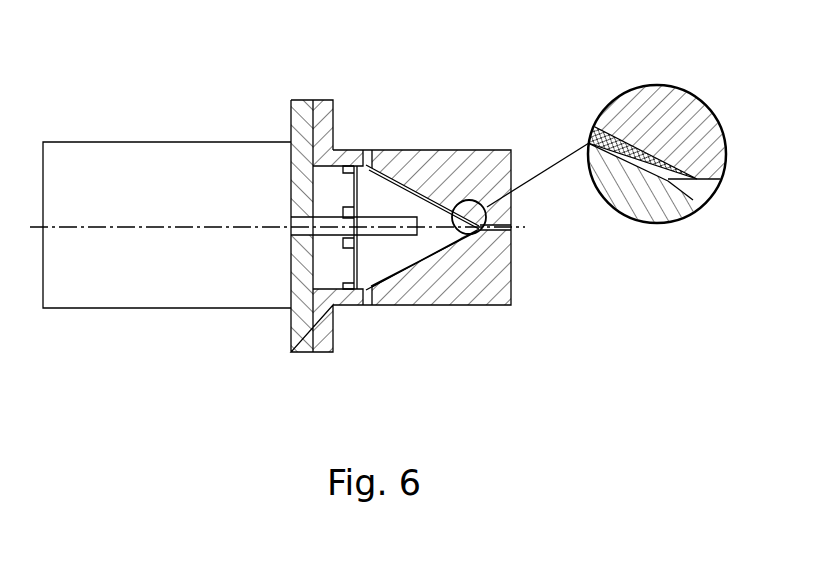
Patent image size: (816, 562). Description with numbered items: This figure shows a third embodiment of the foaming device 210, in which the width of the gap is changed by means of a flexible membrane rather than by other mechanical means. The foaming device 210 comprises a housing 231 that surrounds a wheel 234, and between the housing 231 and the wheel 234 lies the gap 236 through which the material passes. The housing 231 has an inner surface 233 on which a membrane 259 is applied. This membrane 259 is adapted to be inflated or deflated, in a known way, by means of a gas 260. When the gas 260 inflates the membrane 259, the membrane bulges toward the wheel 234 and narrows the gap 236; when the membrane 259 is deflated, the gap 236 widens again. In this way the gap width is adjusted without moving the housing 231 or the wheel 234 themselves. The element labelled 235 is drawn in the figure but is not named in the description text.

The foaming device 210 is at (135, 107).
The housing 231 is at (492, 293).
The inner surface 233 is at (418, 250).
The wheel 234 is at (383, 193).
The sealing surface 235 is at (397, 282).
The gap 236 is at (443, 247).
The membrane 259 is at (667, 183).
The gas 260 is at (668, 138).